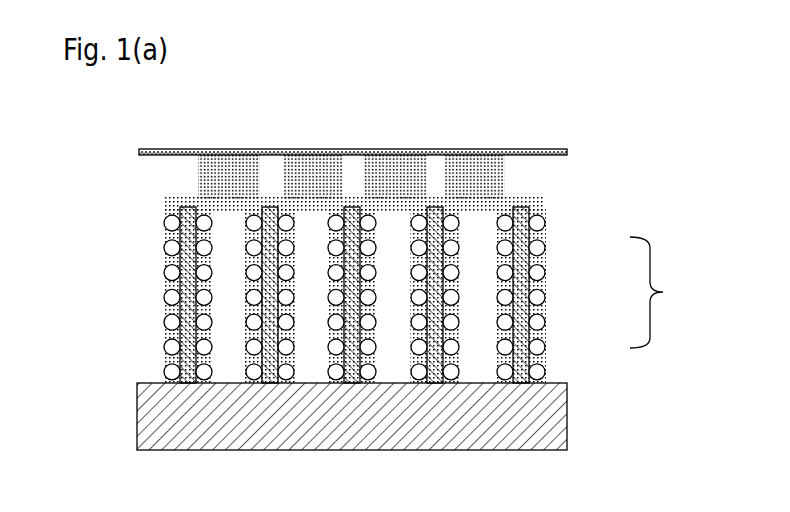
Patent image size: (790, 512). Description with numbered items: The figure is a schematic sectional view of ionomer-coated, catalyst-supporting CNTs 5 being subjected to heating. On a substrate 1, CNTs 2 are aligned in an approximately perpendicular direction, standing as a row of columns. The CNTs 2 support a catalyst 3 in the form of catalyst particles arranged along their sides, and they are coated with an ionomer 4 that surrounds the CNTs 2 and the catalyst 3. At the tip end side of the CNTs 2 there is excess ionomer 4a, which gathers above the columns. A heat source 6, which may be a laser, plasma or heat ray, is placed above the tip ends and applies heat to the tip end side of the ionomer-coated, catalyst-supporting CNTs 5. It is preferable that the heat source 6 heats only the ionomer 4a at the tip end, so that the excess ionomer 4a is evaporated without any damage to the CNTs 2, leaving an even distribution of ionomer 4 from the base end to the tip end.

The substrate 1 is at (558, 413).
The CNTs 2 is at (525, 338).
The catalyst 3 is at (538, 243).
The ionomer 4 is at (535, 310).
The excess ionomer 4a is at (498, 190).
The ionomer-coated, catalyst-supporting CNTs 5 is at (656, 292).
The heat source 6 is at (567, 151).